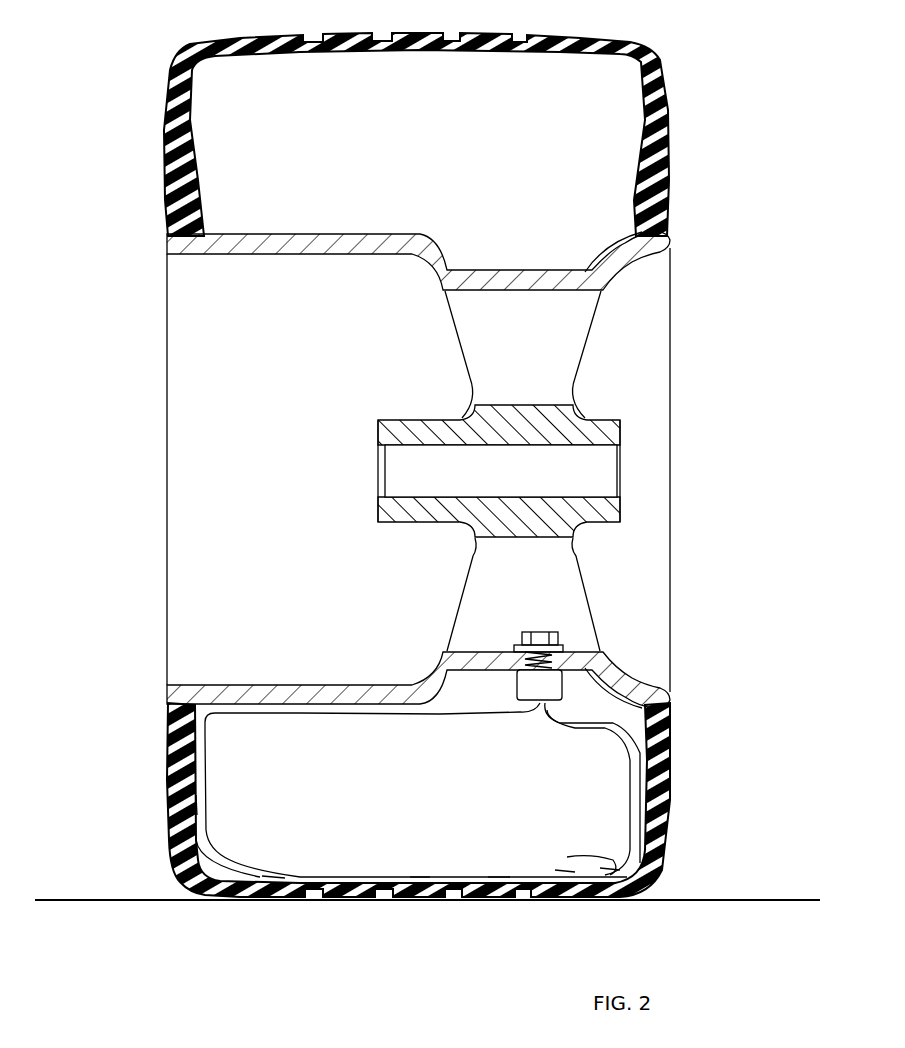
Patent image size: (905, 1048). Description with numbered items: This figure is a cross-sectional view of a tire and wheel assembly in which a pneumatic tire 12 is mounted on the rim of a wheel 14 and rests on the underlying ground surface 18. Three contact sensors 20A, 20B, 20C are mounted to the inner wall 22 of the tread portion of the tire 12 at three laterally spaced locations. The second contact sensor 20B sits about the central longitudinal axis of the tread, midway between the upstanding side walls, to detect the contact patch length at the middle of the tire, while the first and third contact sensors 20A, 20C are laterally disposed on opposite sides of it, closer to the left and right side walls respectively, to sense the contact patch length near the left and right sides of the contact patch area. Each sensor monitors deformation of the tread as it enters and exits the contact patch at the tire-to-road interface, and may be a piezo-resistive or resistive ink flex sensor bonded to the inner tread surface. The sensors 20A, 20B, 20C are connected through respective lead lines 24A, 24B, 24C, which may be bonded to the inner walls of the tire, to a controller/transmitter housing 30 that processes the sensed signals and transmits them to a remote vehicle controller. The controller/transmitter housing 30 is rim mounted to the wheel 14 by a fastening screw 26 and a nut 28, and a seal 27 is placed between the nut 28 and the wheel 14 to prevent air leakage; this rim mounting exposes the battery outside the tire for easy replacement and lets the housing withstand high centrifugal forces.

The tire 12 is at (673, 805).
The wheel 14 is at (232, 685).
The ground surface 18 is at (143, 898).
The first contact sensor 20A is at (270, 875).
The second contact sensor 20B is at (420, 877).
The third contact sensor 20C is at (565, 870).
The inner wall 22 is at (342, 877).
The lead line 24A is at (197, 803).
The lead line 24B is at (498, 875).
The lead line 24C is at (610, 868).
The fastening screw 26 is at (525, 657).
The seal 27 is at (567, 650).
The nut 28 is at (540, 630).
The controller/transmitter housing 30 is at (567, 687).